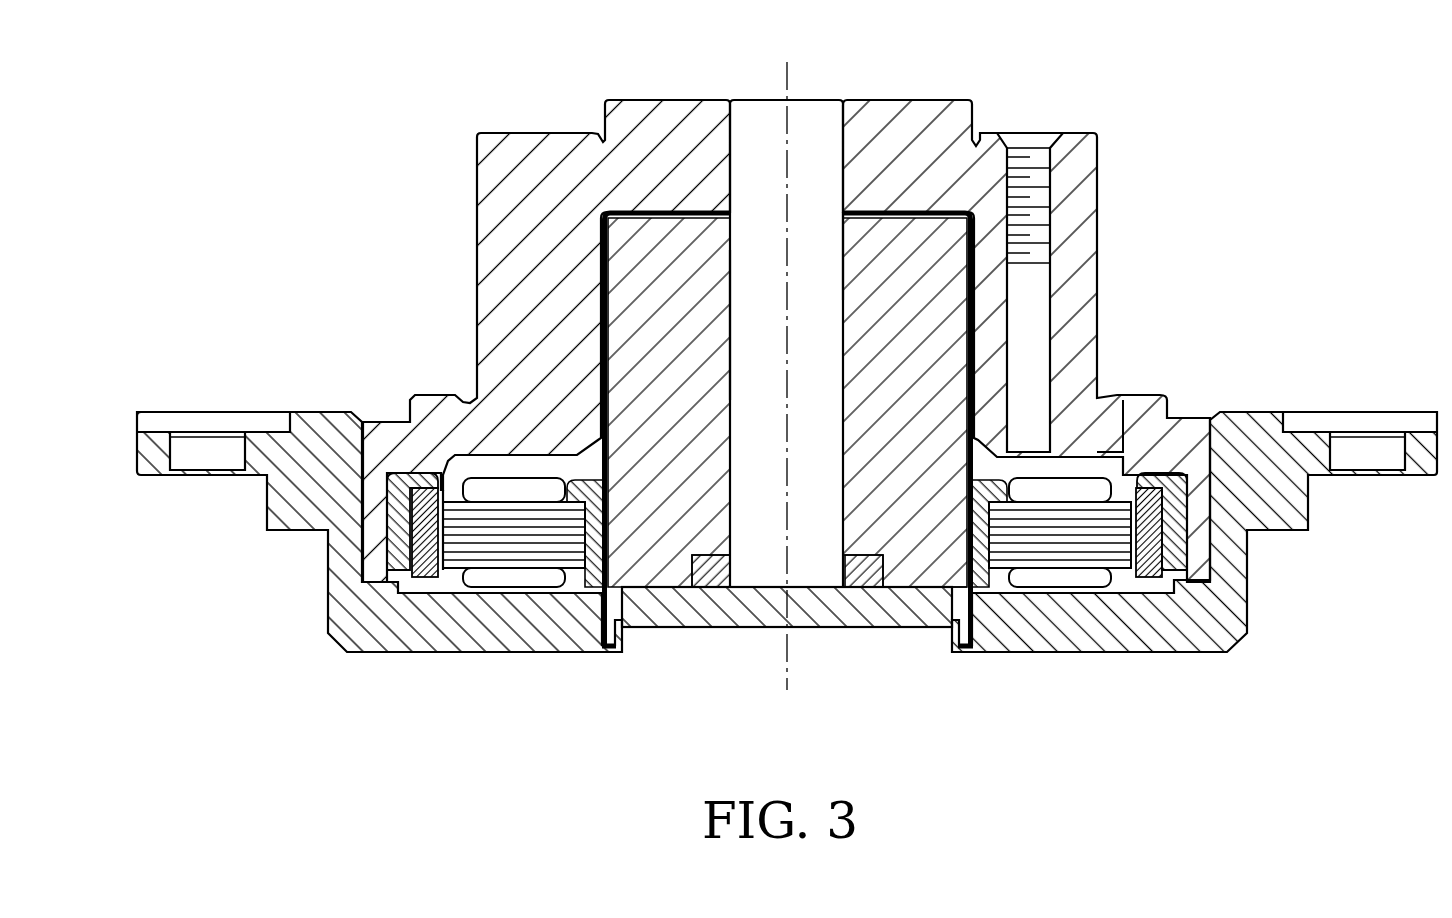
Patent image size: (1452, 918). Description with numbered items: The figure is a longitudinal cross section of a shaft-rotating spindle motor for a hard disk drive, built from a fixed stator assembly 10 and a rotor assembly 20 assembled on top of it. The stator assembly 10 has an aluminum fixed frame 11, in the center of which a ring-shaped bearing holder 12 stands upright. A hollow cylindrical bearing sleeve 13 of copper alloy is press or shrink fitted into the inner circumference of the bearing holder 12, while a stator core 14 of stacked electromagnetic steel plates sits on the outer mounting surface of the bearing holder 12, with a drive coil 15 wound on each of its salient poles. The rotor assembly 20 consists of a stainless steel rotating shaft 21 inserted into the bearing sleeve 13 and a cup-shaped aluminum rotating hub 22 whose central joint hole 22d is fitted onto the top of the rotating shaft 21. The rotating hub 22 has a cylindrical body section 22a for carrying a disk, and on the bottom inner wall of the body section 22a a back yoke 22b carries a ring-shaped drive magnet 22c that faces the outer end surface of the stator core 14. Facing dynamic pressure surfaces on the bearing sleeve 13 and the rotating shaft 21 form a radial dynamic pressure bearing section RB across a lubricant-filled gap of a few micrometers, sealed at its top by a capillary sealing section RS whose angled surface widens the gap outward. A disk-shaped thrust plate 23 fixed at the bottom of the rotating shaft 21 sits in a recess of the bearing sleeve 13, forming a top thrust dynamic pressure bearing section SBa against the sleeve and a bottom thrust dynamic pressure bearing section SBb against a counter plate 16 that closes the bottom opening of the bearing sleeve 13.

The stator assembly 10 is at (787, 480).
The fixed frame 11 is at (1115, 632).
The bearing holder 12 is at (982, 578).
The bearing sleeve 13 is at (660, 424).
The stator core 14 is at (540, 542).
The drive coil 15 is at (477, 577).
The counter plate 16 is at (765, 612).
The rotor assembly 20 is at (846, 359).
The rotating shaft 21 is at (786, 299).
The rotating hub 22 is at (1102, 320).
The body section 22a is at (1085, 238).
The back yoke 22b is at (1175, 532).
The drive magnet 22c is at (1153, 567).
The joint hole 22d is at (838, 124).
The thrust plate 23 is at (707, 577).
The top thrust dynamic pressure bearing section SBa is at (890, 543).
The bottom thrust dynamic pressure bearing section SBb is at (867, 587).
The radial dynamic pressure bearing section RB is at (744, 325).
The capillary sealing section RS is at (843, 221).